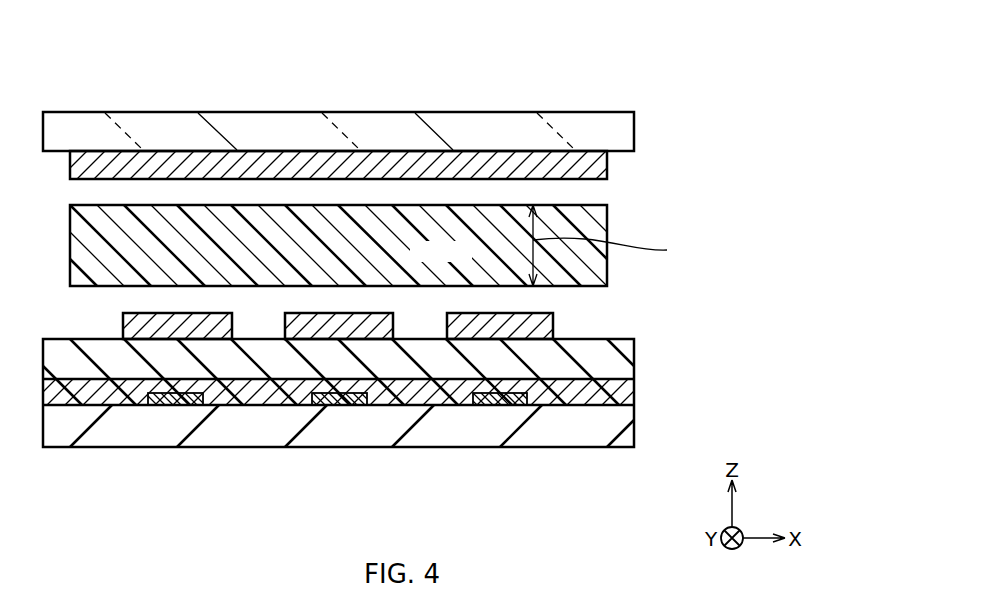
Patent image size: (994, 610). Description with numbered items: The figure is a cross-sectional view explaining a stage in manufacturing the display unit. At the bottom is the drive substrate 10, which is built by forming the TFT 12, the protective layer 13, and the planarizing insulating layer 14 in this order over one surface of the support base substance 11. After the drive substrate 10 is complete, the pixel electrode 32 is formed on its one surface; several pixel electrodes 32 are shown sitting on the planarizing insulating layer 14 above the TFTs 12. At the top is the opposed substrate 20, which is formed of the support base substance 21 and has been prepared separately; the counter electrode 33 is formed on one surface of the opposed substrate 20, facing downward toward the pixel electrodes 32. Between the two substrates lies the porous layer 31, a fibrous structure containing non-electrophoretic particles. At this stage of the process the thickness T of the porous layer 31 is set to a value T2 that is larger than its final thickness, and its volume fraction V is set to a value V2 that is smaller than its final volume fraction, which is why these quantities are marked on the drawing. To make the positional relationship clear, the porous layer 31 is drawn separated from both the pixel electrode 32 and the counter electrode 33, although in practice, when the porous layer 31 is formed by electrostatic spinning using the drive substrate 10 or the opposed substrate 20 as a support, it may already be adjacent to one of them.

The drive substrate 10 is at (597, 472).
The support base substance 11 is at (97, 438).
The TFT 12 is at (177, 400).
The protective layer 13 is at (280, 403).
The planarizing insulating layer 14 is at (405, 363).
The opposed substrate 20 is at (597, 83).
The support base substance 21 is at (95, 123).
The porous layer 31 is at (433, 227).
The pixel electrode 32 is at (493, 325).
The counter electrode 33 is at (230, 167).